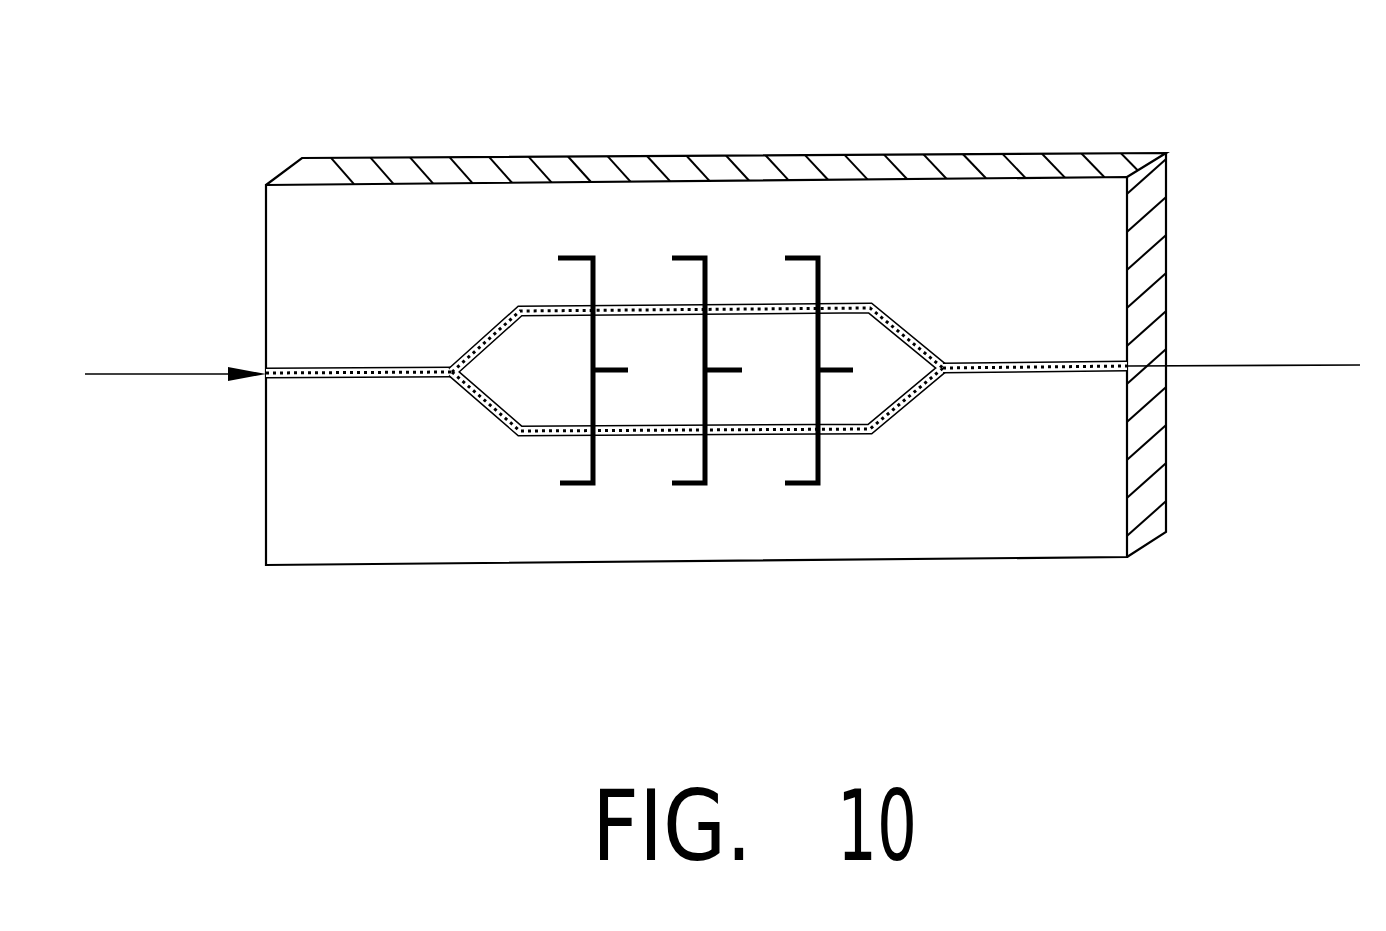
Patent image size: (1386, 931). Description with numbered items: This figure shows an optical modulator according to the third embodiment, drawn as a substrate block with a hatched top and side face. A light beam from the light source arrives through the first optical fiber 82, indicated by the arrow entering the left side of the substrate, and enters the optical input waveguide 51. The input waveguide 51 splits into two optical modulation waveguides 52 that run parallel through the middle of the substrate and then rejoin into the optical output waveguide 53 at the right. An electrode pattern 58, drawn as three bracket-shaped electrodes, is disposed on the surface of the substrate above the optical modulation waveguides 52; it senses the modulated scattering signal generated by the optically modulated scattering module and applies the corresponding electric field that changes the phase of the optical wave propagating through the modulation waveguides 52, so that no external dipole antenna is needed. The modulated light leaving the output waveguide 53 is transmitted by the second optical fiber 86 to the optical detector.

The optical input waveguide 51 is at (310, 380).
The optical modulation waveguides 52 is at (847, 305).
The optical output waveguide 53 is at (1082, 373).
The electrode pattern 58 is at (693, 256).
The first optical fiber 82 is at (158, 373).
The second optical fiber 86 is at (1277, 365).